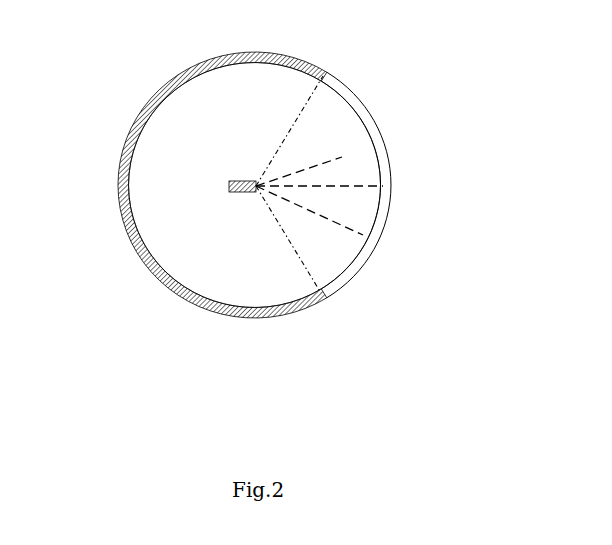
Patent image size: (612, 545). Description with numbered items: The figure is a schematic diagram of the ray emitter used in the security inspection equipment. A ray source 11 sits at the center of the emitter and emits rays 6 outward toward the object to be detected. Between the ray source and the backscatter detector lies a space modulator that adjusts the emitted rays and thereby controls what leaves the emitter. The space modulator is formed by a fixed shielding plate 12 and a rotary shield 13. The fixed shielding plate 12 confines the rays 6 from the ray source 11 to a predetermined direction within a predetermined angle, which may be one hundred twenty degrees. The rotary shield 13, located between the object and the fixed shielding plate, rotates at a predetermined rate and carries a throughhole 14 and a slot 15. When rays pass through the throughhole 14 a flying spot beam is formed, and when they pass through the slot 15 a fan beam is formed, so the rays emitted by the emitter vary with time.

The rays 6 is at (342, 157).
The ray source 11 is at (256, 186).
The fixed shielding plate 12 is at (298, 273).
The rotary shield 13 is at (120, 225).
The throughhole 14 is at (117, 187).
The slot 15 is at (382, 135).